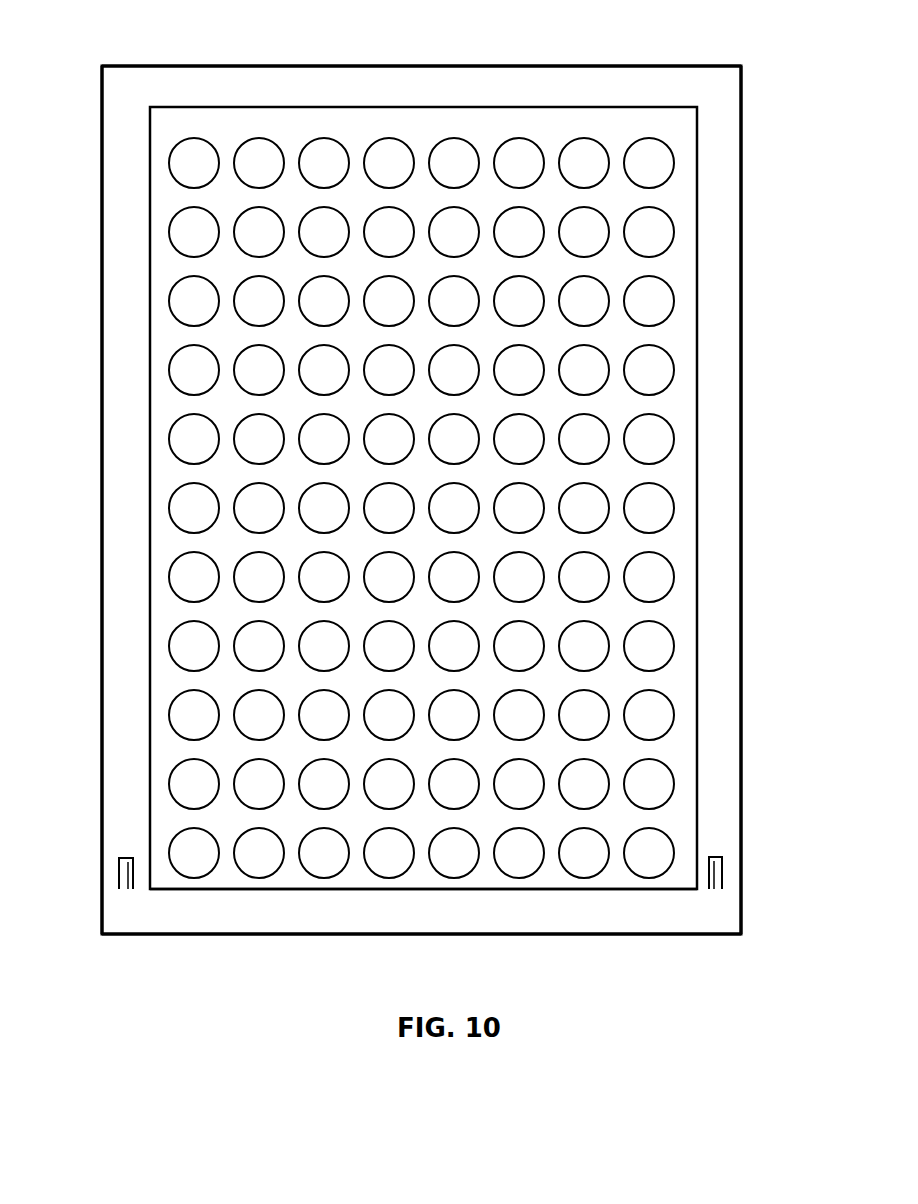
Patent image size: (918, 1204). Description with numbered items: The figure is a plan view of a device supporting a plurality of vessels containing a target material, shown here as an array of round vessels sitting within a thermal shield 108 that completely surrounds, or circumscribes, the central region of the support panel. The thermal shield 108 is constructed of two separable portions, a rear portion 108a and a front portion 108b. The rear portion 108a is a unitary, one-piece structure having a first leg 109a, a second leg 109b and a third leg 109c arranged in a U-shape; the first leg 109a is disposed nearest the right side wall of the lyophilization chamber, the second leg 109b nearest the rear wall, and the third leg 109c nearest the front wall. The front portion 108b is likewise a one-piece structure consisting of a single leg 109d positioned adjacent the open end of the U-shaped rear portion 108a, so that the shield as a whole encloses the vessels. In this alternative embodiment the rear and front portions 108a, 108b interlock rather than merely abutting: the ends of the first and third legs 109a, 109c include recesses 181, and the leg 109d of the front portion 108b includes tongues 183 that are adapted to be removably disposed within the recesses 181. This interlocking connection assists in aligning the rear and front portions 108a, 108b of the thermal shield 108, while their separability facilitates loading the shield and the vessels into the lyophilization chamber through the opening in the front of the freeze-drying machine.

The thermal shield 108 is at (750, 210).
The rear portion 108a is at (719, 307).
The front portion 108b is at (313, 922).
The first leg 109a is at (727, 340).
The second leg 109b is at (665, 66).
The third leg 109c is at (122, 256).
The leg 109d is at (472, 915).
The recesses 181 is at (124, 884).
The tongues 183 is at (129, 873).